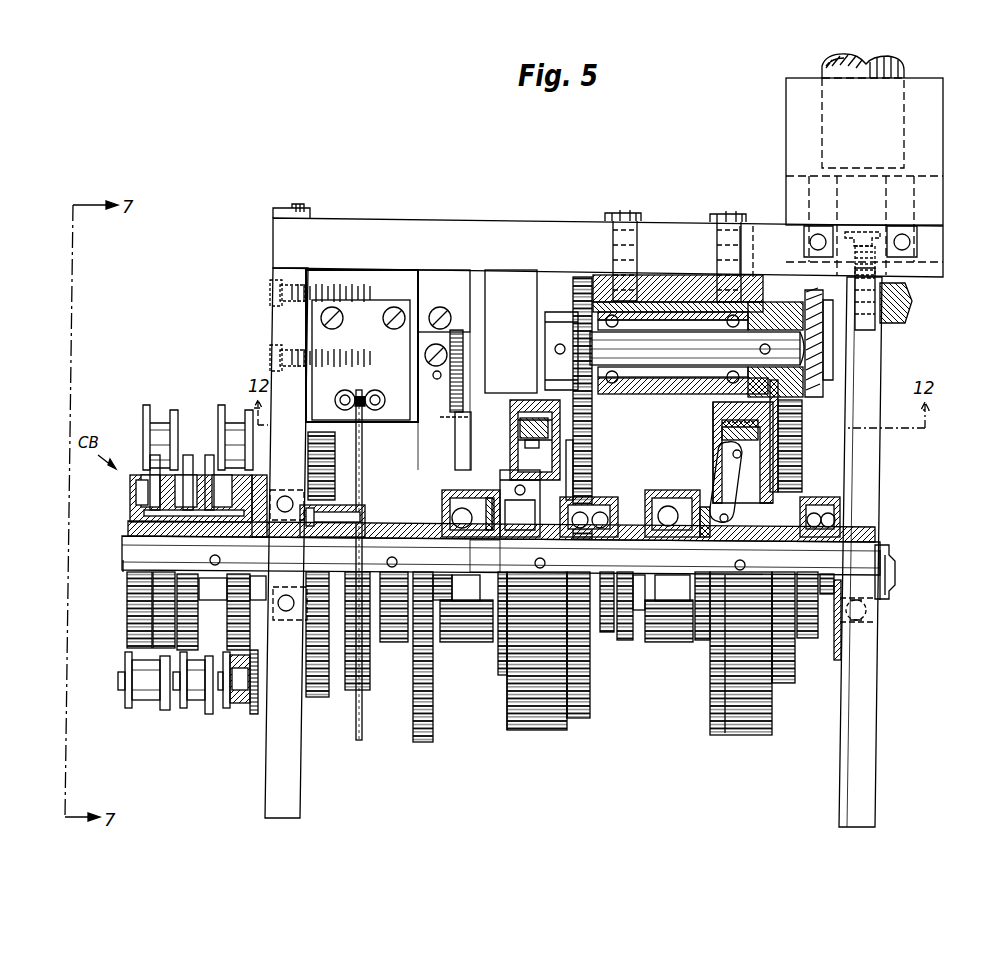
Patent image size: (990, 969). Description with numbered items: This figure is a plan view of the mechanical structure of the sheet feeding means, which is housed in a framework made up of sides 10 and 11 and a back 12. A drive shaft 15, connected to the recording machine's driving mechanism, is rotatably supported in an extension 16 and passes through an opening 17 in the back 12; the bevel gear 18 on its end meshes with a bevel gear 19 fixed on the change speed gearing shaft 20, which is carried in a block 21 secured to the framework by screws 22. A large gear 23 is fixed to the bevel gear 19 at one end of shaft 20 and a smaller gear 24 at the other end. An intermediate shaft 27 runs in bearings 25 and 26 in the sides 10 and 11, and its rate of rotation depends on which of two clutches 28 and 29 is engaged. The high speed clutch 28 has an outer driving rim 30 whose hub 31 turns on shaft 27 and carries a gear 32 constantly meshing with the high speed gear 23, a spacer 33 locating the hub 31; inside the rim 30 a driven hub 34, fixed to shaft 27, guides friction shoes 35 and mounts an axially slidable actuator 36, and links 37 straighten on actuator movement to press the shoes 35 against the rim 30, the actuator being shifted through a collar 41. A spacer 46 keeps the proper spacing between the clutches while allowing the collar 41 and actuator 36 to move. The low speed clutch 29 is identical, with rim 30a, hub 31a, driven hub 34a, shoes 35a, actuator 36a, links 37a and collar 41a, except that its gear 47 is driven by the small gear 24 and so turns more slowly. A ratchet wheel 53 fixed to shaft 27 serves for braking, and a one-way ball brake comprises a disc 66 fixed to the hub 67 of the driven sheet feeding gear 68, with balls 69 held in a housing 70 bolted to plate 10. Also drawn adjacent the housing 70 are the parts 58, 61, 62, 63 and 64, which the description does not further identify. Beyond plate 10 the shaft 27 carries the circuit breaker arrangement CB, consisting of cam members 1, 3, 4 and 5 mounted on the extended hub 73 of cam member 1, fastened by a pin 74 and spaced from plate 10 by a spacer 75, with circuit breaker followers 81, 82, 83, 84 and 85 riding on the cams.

The cam member 1 is at (230, 630).
The cam member 3 is at (196, 464).
The cam member 4 is at (150, 468).
The cam member 5 is at (130, 502).
The side 10 is at (274, 764).
The side 11 is at (876, 748).
The back 12 is at (366, 222).
The shaft 15 is at (904, 70).
The extension 16 is at (934, 144).
The opening 17 is at (760, 238).
The bevel gear 18 is at (906, 312).
The bevel gear 19 is at (810, 396).
The change speed gearing shaft 20 is at (674, 349).
The block 21 is at (653, 274).
The screws 22 is at (724, 213).
The large gear 23 is at (802, 442).
The smaller gear 24 is at (593, 404).
The bearing 25 is at (284, 500).
The bearing 26 is at (854, 620).
The intermediate shaft 27 is at (896, 568).
The high speed clutch 28 is at (752, 732).
The low speed clutch 29 is at (531, 732).
The outer driving rim 30 is at (712, 420).
The outer driving rim 30a is at (510, 398).
The hub 31 is at (822, 504).
The hub 31a is at (602, 498).
The gear 32 is at (802, 470).
The spacer 33 is at (832, 640).
The driven hub 34 is at (708, 540).
The driven hub 34a is at (492, 540).
The friction shoes 35 is at (720, 434).
The friction shoes 35a is at (534, 433).
The actuator 36 is at (700, 500).
The actuator 36a is at (490, 492).
The links 37 is at (724, 472).
The links 37a is at (540, 540).
The collar 41 is at (650, 640).
The collar 41a is at (442, 640).
The spacer 46 is at (628, 614).
The gear 47 is at (594, 440).
The ratchet wheel 53 is at (428, 744).
The panel 58 is at (430, 272).
The bar 61 is at (474, 432).
The plate 62 is at (484, 333).
The screw 63 is at (426, 332).
The screw 64 is at (454, 308).
The disc 66 is at (362, 452).
The hub 67 is at (340, 510).
The driven sheet feeding gear 68 is at (330, 462).
The balls 69 is at (337, 398).
The housing 70 is at (393, 278).
The extended hub 73 is at (220, 490).
The pin 74 is at (130, 528).
The spacer 75 is at (256, 520).
The circuit breaker follower 81 is at (242, 710).
The circuit breaker follower 82 is at (240, 416).
The circuit breaker follower 83 is at (196, 712).
The circuit breaker follower 84 is at (168, 416).
The circuit breaker follower 85 is at (144, 708).